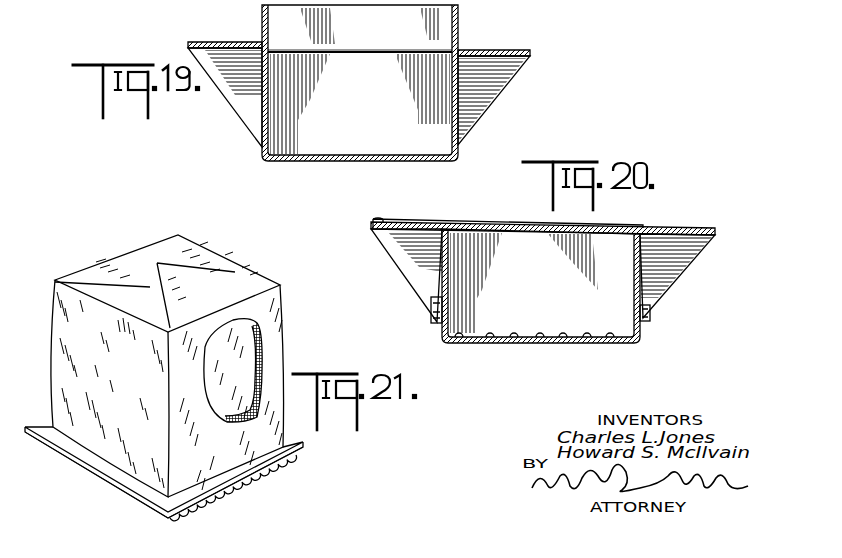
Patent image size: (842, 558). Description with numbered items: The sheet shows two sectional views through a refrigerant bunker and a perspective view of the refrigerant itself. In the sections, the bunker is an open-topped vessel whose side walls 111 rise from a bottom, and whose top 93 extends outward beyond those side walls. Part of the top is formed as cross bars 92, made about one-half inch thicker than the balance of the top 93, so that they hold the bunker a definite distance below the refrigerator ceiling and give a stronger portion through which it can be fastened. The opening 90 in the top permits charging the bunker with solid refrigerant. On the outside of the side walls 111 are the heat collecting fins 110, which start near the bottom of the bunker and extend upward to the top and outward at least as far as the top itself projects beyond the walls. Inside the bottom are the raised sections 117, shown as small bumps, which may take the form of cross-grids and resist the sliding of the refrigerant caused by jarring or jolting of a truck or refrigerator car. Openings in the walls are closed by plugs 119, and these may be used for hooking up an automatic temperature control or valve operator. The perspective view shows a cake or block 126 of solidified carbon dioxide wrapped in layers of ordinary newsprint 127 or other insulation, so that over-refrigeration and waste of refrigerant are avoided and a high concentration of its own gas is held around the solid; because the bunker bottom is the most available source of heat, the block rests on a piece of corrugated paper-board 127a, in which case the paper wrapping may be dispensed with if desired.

In FIG. 19, the opening 90 is at (442, 18).
In FIG. 20, the cross bars 92 is at (432, 205).
In FIG. 19, the top 93 is at (500, 47).
In FIG. 20, the top 93 is at (512, 222).
In FIG. 19, the heat collecting fins 110 is at (245, 119).
In FIG. 20, the heat collecting fins 110 is at (413, 260).
In FIG. 20, the side walls 111 is at (443, 277).
In FIG. 20, the raised sections 117 is at (556, 336).
In FIG. 20, the plugs 119 is at (432, 308).
In FIG. 21, the cake or block of solidified carbon dioxide 126 is at (233, 358).
In FIG. 21, the newsprint 127 is at (257, 330).
In FIG. 21, the corrugated paper-board 127a is at (277, 458).